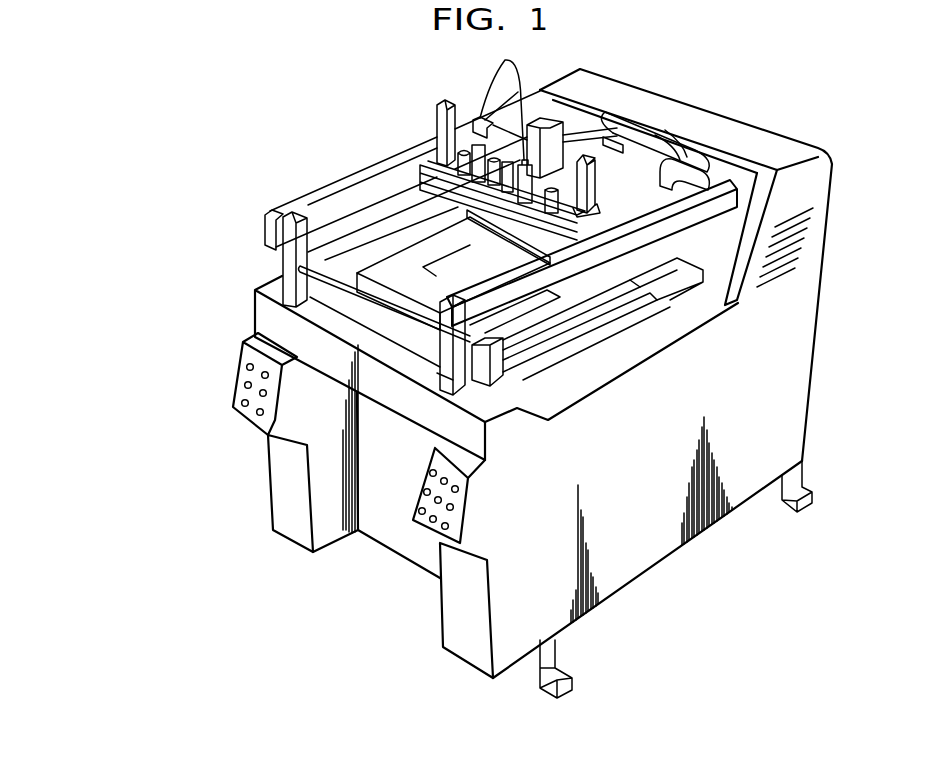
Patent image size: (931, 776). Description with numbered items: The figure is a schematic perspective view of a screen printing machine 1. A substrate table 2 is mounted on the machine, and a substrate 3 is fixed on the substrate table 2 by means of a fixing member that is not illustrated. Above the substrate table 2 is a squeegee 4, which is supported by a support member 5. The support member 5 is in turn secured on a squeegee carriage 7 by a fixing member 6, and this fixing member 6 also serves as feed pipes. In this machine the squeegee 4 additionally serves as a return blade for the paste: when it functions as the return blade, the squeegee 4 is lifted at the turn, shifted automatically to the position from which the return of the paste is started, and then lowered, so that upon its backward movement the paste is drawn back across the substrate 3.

The screen printing machine 1 is at (653, 78).
The substrate table 2 is at (402, 267).
The substrate 3 is at (485, 282).
The squeegee 4 is at (498, 200).
The support member 5 is at (522, 190).
The fixing member 6 is at (545, 200).
The squeegee carriage 7 is at (580, 195).